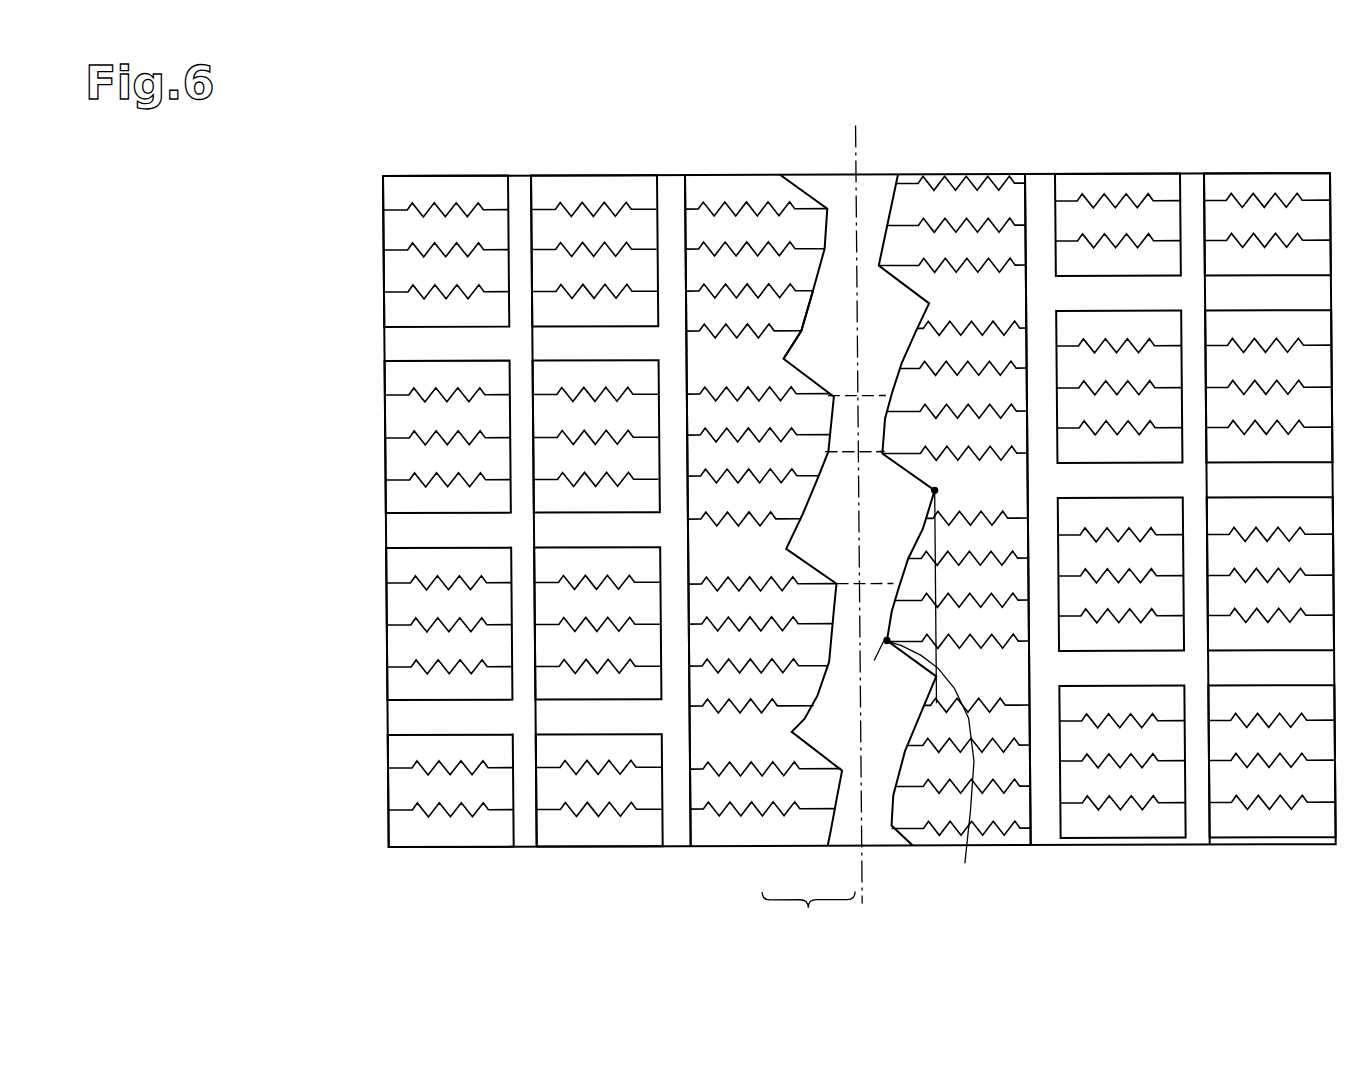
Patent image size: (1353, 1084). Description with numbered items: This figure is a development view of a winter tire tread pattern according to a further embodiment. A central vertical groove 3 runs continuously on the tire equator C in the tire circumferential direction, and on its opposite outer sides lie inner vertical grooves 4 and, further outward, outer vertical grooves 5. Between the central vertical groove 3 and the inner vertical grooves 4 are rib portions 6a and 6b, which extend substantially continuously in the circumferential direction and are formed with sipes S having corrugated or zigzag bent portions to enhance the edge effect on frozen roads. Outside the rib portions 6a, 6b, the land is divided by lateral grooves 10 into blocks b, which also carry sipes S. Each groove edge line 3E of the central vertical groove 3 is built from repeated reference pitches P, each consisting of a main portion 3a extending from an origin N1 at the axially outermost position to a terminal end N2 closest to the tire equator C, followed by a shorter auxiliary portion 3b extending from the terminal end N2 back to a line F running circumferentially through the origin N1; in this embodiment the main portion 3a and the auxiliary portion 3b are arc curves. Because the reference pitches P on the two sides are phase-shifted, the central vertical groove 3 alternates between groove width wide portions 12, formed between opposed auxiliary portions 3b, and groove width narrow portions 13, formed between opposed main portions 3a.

The lateral groove 10 is at (415, 352).
The block b is at (436, 183).
The sipe S is at (408, 288).
The rib portion 6b is at (752, 188).
The rib portion 6a is at (1000, 183).
The central vertical groove 3 is at (847, 503).
The main portion 3a is at (823, 535).
The auxiliary portion 3b is at (876, 535).
The groove edge line 3E is at (812, 305).
The groove width narrow portion 13 is at (872, 440).
The groove width wide portion 12 is at (897, 536).
The origin N1 is at (952, 492).
The terminal end N2 is at (877, 662).
The line in the tire circumferential direction F is at (924, 698).
The tire equator C is at (856, 501).
The reference pitch P is at (808, 917).
The inner vertical groove 4 is at (675, 840).
The outer vertical groove 5 is at (527, 840).